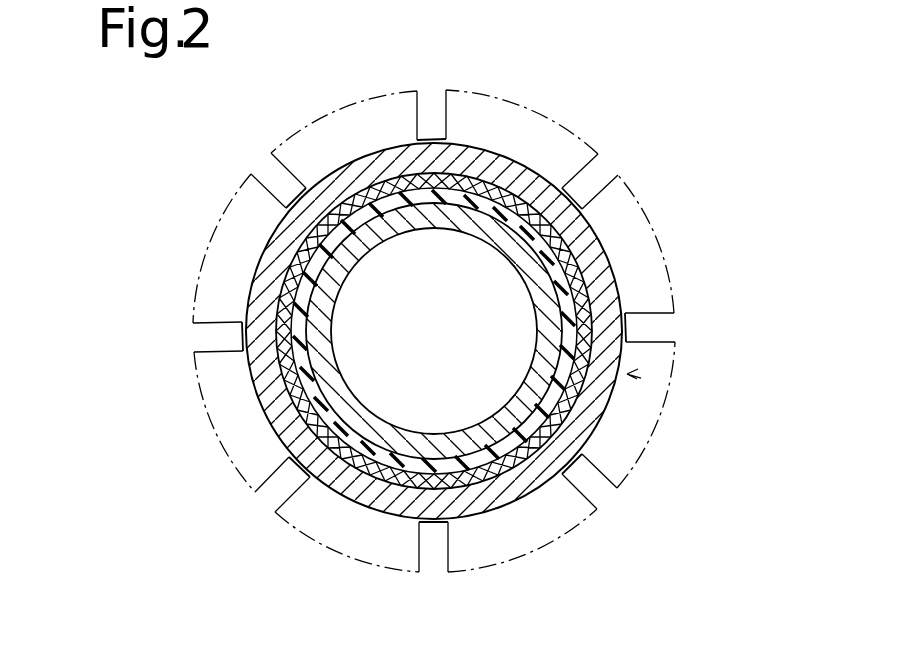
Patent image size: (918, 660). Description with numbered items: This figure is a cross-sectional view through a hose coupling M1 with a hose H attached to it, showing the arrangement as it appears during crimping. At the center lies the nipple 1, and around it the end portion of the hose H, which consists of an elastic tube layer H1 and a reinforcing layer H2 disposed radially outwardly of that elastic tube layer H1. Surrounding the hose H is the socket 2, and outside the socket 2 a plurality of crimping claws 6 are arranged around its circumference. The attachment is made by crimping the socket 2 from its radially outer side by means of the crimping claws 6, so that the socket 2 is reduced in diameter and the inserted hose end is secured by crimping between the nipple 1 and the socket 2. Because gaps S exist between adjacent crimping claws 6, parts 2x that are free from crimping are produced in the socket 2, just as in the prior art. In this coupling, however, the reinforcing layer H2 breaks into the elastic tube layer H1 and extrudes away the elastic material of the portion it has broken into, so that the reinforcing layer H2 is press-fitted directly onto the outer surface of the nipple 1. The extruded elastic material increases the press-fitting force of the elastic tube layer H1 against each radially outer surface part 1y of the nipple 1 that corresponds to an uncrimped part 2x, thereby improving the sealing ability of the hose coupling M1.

The nipple 1 is at (352, 376).
The radially outer surface part 1y is at (463, 148).
The socket 2 is at (493, 372).
The parts free from crimping 2x is at (430, 140).
The crimping claws 6 is at (657, 230).
The gaps S is at (598, 178).
The hose coupling M1 is at (641, 378).
The hose H is at (493, 372).
The elastic tube layer H1 is at (464, 492).
The reinforcing layer H2 is at (503, 476).